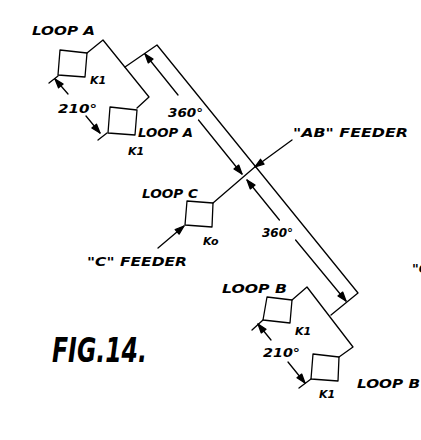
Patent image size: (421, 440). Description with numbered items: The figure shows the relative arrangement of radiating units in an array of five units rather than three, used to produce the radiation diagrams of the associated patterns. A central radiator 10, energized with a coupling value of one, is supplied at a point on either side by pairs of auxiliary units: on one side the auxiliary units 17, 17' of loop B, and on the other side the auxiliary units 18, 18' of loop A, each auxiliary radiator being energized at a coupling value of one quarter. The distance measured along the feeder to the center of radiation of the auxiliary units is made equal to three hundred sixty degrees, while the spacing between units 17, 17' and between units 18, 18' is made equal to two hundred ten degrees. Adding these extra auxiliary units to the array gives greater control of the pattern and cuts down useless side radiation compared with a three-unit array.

The auxiliary radiating unit 18' is at (57, 63).
The auxiliary radiating unit 18 is at (110, 130).
The central radiator 10 is at (187, 212).
The auxiliary radiating unit 17 is at (257, 310).
The auxiliary radiating unit 17' is at (355, 357).